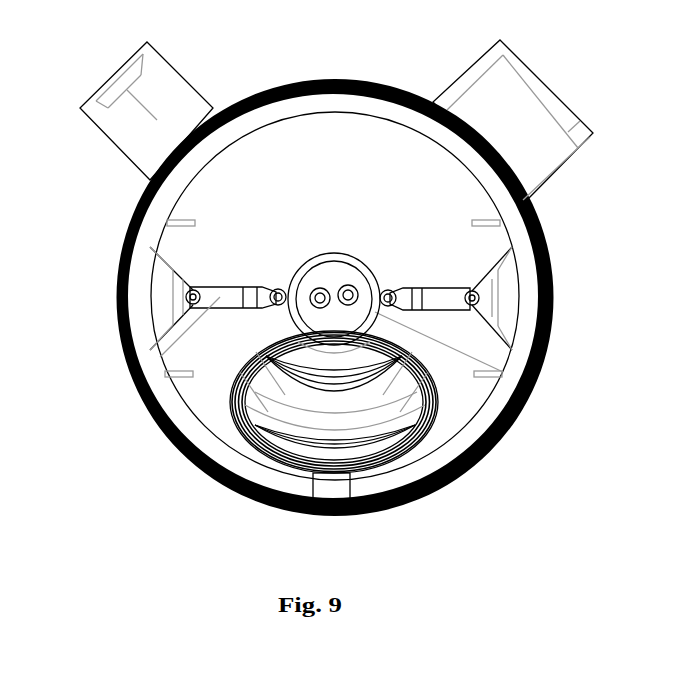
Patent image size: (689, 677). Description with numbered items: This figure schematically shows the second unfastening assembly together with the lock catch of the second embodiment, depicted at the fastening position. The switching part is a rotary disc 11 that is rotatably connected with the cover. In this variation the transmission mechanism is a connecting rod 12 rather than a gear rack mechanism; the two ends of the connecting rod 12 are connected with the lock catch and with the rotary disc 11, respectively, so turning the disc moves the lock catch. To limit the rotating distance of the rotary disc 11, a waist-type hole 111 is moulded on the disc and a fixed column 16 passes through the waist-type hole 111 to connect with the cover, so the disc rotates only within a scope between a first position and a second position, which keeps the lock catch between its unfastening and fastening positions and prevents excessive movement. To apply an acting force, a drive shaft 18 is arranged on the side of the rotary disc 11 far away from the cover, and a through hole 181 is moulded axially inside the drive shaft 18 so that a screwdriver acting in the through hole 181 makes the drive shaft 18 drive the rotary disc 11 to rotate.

The rotary disc 11 is at (350, 285).
The connecting rod 12 is at (148, 385).
The fixed column 16 is at (577, 403).
The drive shaft 18 is at (320, 288).
The waist-type hole 111 is at (232, 452).
The through hole 181 is at (437, 447).